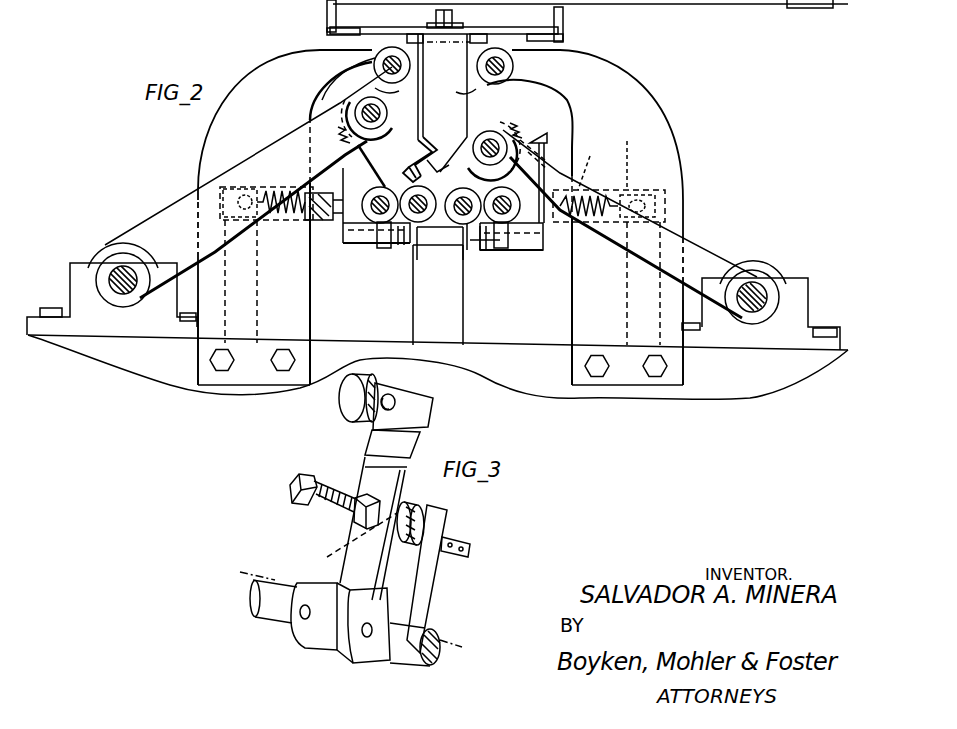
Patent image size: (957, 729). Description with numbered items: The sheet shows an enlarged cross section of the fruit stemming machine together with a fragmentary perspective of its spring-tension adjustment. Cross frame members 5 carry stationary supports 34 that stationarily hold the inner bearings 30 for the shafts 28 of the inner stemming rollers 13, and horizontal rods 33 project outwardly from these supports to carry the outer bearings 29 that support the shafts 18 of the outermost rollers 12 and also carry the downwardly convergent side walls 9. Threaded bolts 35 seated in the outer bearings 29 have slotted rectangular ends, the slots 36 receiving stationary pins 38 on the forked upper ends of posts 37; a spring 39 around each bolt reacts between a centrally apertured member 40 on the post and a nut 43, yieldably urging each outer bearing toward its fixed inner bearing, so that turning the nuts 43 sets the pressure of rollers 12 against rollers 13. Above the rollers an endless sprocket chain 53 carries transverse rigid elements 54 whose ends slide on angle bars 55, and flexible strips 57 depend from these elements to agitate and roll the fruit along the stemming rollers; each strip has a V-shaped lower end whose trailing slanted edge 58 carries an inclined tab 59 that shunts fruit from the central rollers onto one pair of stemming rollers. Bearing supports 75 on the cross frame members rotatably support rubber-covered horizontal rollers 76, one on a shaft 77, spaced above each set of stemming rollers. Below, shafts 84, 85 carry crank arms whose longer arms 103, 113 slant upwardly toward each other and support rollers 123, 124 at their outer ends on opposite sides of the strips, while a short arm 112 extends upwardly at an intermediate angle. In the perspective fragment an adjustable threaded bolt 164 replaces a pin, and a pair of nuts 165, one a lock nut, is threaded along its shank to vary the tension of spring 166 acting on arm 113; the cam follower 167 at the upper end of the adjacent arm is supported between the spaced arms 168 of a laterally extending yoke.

In FIG. 2, the cross frame member 5 is at (781, 385).
In FIG. 2, the side wall 9 is at (343, 156).
In FIG. 2, the outermost stemming roller 12 is at (386, 183).
In FIG. 2, the inner stemming roller 13 is at (471, 252).
In FIG. 2, the shaft of outer roller 18 is at (381, 249).
In FIG. 2, the shaft of inner roller 28 is at (440, 243).
In FIG. 2, the outer bearing 29 is at (350, 246).
In FIG. 2, the inner bearing 30 is at (438, 186).
In FIG. 2, the horizontal rod 33 is at (403, 250).
In FIG. 2, the stationary support 34 is at (449, 322).
In FIG. 2, the threaded bolt 35 is at (350, 228).
In FIG. 2, the slot 36 is at (196, 189).
In FIG. 2, the post 37 is at (627, 290).
In FIG. 2, the stationary pin 38 is at (247, 187).
In FIG. 2, the spring 39 is at (280, 187).
In FIG. 2, the centrally apertured member 40 is at (626, 154).
In FIG. 2, the nut 43 is at (592, 162).
In FIG. 2, the endless sprocket chain 53 is at (437, 13).
In FIG. 2, the rigid element 54 is at (533, 33).
In FIG. 2, the angle bar 55 is at (570, 30).
In FIG. 2, the flexible strip 57 is at (463, 91).
In FIG. 2, the slanted lower edge 58 is at (421, 149).
In FIG. 2, the tab 59 is at (407, 166).
In FIG. 2, the bearing support 75 is at (200, 138).
In FIG. 2, the horizontal roller 76 is at (373, 64).
In FIG. 2, the shaft of roller 77 is at (335, 85).
In FIG. 2, the shaft 84 is at (753, 305).
In FIG. 2, the shaft 85 is at (119, 270).
In FIG. 3, the shaft 85 is at (437, 640).
In FIG. 2, the longer arm 103 is at (693, 241).
In FIG. 3, the short arm 112 is at (408, 446).
In FIG. 2, the longer arm 113 is at (173, 229).
In FIG. 3, the longer arm 113 is at (430, 577).
In FIG. 2, the roller 123 is at (494, 130).
In FIG. 2, the roller 124 is at (318, 105).
In FIG. 3, the adjustable threaded bolt 164 is at (338, 490).
In FIG. 3, the nut 165 is at (380, 513).
In FIG. 3, the spring 166 is at (426, 510).
In FIG. 3, the cam follower 167 is at (345, 405).
In FIG. 3, the yoke arm 168 is at (415, 405).